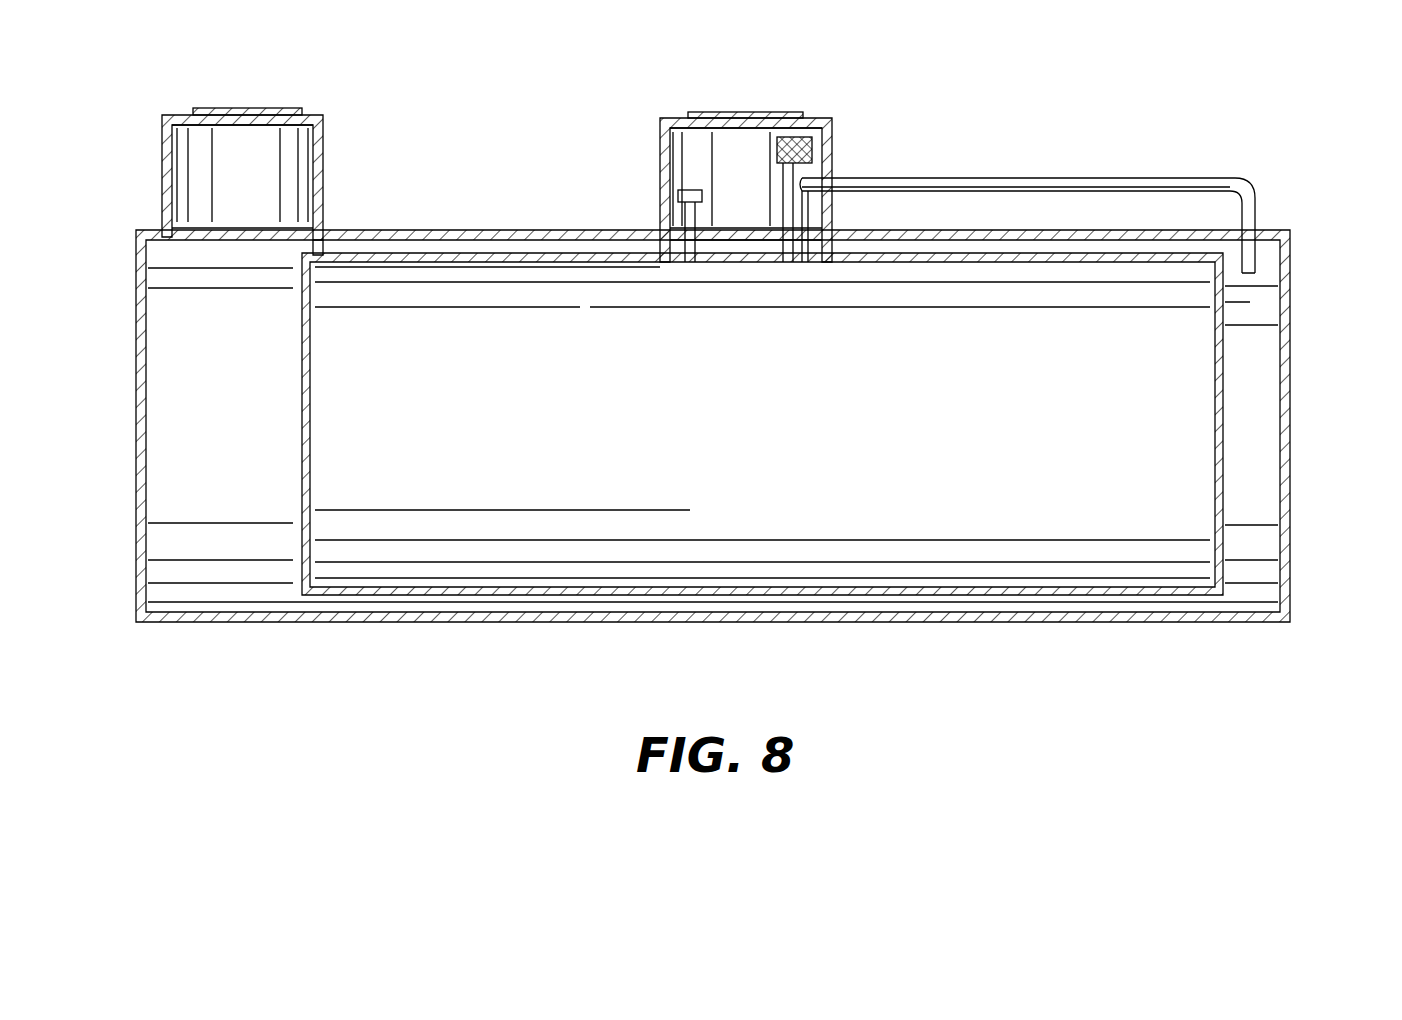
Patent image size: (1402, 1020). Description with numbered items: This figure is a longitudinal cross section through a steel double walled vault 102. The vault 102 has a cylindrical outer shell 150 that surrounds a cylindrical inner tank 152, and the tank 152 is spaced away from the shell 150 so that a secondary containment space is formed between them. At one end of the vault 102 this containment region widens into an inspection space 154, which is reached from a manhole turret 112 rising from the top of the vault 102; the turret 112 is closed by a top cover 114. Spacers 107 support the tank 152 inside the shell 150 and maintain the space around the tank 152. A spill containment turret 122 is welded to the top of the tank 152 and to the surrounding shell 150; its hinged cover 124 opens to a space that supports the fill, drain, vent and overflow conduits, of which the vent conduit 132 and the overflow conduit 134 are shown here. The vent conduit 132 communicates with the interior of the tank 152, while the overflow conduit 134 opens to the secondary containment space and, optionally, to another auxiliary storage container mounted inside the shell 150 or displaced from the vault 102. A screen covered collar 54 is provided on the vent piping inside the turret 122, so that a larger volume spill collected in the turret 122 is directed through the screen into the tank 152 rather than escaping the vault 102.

The double walled vault 102 is at (493, 177).
The spacers 107 is at (323, 247).
The manhole turret 112 is at (322, 145).
The first cap top plate 114 is at (267, 110).
The spill containment turret 122 is at (660, 138).
The hinged cover 124 is at (767, 115).
The vent conduit 132 is at (685, 207).
The overflow conduit 134 is at (1022, 178).
The screen covered collar 54 is at (813, 148).
The outer shell 150 is at (1290, 305).
The inner tank 152 is at (1222, 435).
The inspection space 154 is at (168, 413).